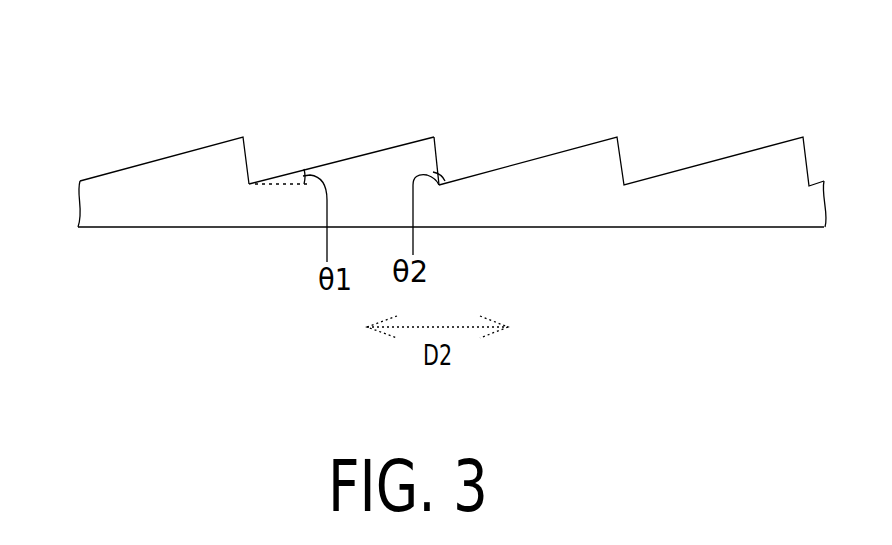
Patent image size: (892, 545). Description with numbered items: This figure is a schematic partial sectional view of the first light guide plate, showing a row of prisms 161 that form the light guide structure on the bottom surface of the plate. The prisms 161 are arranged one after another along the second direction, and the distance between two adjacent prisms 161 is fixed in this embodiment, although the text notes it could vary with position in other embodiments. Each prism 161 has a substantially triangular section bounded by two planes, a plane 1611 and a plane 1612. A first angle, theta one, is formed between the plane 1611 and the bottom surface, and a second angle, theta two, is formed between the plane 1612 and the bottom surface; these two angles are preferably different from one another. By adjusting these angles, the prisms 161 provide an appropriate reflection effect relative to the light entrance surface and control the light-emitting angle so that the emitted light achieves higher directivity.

The prism 161 is at (452, 125).
The plane 1611 is at (383, 150).
The plane 1612 is at (437, 165).